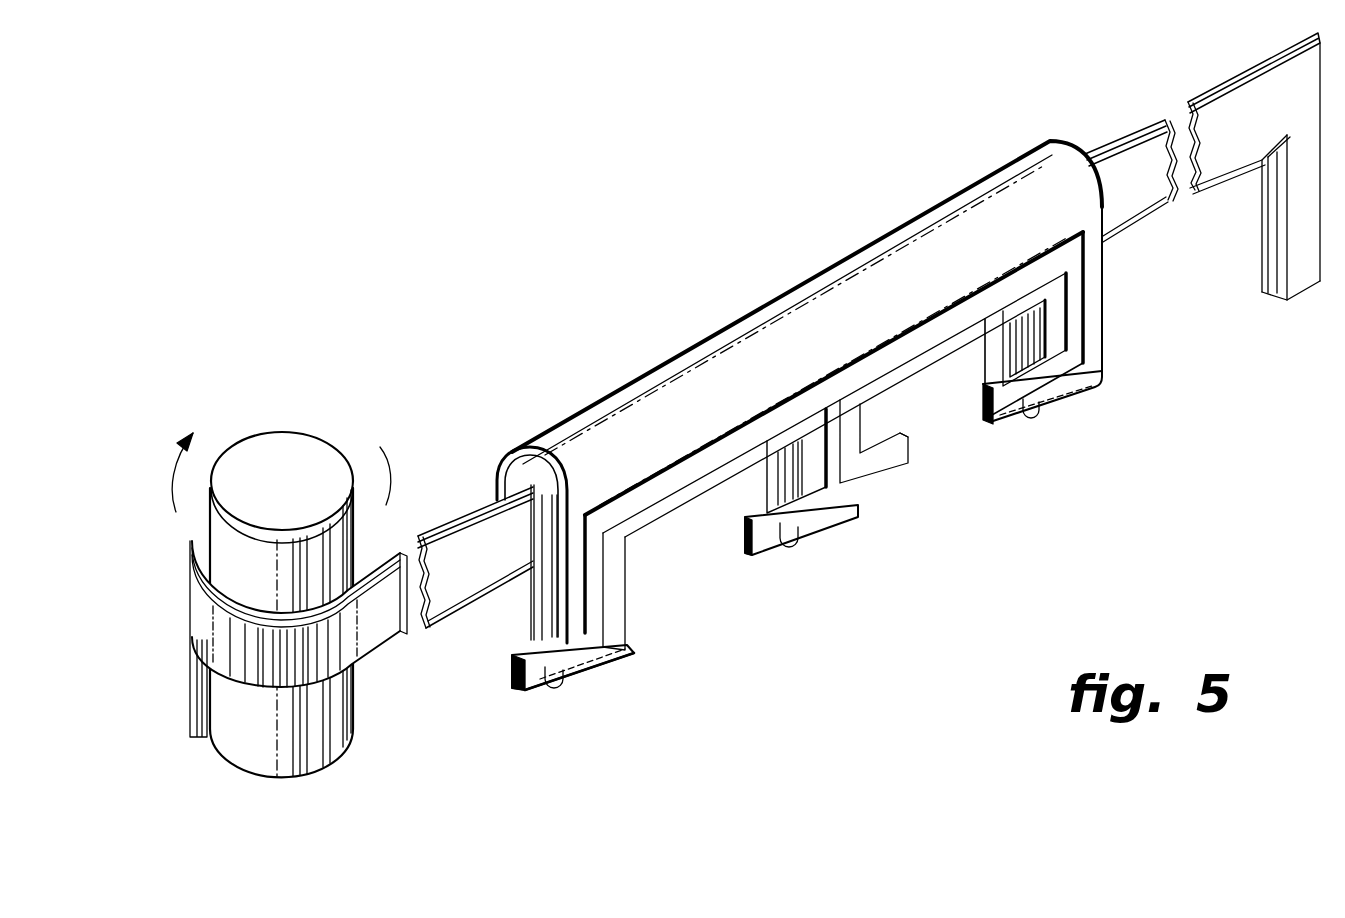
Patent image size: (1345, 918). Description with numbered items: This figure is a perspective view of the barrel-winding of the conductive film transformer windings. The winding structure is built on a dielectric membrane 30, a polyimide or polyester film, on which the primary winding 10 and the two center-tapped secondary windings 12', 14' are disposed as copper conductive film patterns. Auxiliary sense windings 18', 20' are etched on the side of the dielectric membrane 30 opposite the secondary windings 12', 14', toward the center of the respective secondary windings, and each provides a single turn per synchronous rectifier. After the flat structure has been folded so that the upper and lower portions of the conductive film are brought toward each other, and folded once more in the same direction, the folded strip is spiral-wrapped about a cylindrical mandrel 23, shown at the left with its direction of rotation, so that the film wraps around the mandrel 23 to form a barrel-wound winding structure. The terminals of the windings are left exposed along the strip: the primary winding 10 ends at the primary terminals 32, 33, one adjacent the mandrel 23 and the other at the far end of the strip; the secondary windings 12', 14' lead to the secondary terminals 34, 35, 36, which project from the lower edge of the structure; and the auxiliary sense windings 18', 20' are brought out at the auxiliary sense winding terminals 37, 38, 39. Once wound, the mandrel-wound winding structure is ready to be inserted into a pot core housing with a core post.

The primary winding 10 is at (487, 547).
The secondary winding 12' is at (492, 582).
The secondary winding 14' is at (1085, 325).
The auxiliary sense winding 18' is at (638, 572).
The auxiliary sense winding 20' is at (903, 428).
The mandrel 23 is at (335, 767).
The dielectric membrane 30 is at (432, 527).
The primary terminal 32 is at (187, 720).
The primary terminal 33 is at (1297, 273).
The secondary terminal 34 is at (547, 687).
The secondary terminal 35 is at (760, 555).
The secondary terminal 36 is at (1050, 418).
The auxiliary sense winding terminal 37 is at (605, 663).
The auxiliary sense winding terminal 38 is at (860, 512).
The auxiliary sense winding terminal 39 is at (1020, 423).